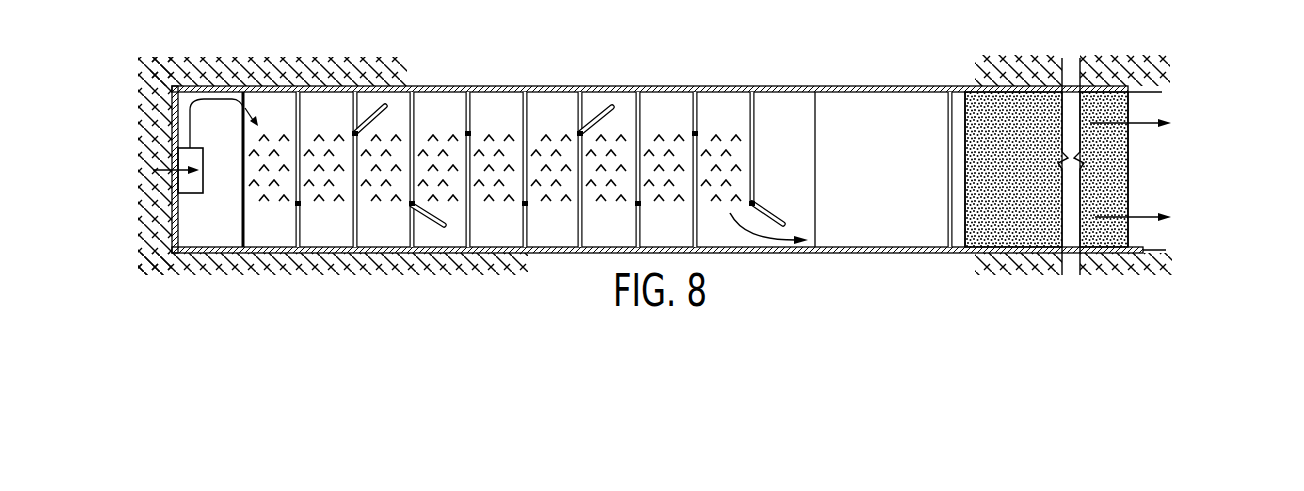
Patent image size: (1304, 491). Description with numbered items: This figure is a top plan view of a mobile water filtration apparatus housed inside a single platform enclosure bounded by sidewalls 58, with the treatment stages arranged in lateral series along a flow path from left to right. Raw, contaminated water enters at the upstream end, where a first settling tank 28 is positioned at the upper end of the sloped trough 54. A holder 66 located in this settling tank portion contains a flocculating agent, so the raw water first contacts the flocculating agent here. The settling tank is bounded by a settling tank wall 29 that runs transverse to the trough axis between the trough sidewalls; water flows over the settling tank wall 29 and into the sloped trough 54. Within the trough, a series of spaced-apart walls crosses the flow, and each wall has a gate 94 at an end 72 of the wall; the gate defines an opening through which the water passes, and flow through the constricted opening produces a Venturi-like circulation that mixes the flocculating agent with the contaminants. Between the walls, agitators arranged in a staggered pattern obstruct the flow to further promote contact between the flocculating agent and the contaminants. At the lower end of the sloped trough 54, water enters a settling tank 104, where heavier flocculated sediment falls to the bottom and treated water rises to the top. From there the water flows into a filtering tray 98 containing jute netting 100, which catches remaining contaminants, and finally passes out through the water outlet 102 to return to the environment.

The first settling tank 28 is at (193, 226).
The settling tank wall 29 is at (245, 250).
The sloped trough 54 is at (808, 77).
The sidewall 58 is at (357, 246).
The holder 66 is at (190, 183).
The end of wall 72 is at (413, 207).
The gate 94 is at (446, 228).
The filtering tray 98 is at (967, 260).
The jute netting 100 is at (1130, 88).
The water outlet 102 is at (1130, 160).
The settling tank 104 is at (855, 229).